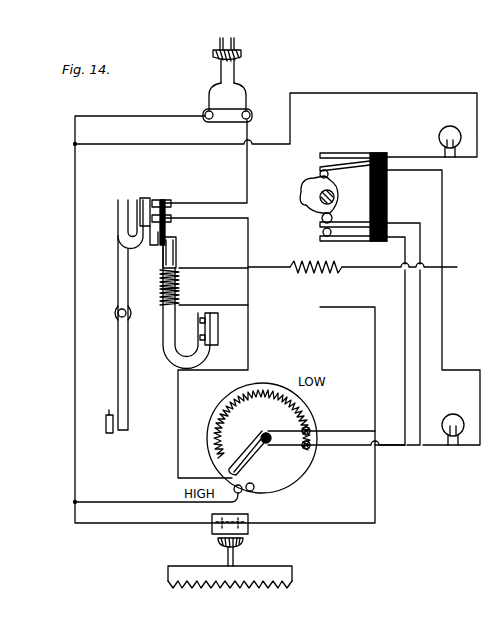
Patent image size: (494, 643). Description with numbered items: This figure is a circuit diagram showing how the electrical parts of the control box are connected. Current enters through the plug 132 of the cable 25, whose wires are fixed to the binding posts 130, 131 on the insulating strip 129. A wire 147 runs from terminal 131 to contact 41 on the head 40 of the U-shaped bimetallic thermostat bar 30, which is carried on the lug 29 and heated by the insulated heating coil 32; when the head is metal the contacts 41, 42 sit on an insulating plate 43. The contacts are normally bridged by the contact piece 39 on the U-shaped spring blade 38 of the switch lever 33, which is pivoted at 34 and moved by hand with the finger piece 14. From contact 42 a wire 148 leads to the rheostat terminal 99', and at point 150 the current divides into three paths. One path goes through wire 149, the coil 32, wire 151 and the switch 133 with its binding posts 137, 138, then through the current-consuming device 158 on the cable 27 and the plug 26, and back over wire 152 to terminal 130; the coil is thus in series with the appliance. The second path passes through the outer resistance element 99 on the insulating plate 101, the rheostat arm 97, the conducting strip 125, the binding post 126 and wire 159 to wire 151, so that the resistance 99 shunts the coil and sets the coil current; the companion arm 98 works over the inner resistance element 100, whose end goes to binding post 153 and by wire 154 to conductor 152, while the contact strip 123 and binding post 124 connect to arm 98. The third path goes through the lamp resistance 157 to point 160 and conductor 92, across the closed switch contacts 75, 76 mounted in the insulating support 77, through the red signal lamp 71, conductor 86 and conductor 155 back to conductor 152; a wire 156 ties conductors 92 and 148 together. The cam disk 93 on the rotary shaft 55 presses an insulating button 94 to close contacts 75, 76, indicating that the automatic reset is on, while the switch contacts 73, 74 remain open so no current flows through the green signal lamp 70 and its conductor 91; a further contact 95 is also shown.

The finger piece 14 is at (108, 434).
The cable 25 is at (226, 72).
The plug 26 is at (244, 541).
The cable 27 is at (228, 559).
The lug 29 is at (219, 329).
The thermostat bar 30 is at (164, 337).
The heating coil 32 is at (180, 290).
The switch lever 33 is at (118, 377).
The pivot 34 is at (118, 312).
The spring blade 38 is at (133, 236).
The contact piece 39 is at (146, 197).
The head 40 is at (177, 252).
The contact 41 is at (162, 198).
The contact 42 is at (153, 228).
The insulating plate 43 is at (172, 224).
The rotary shaft 55 is at (320, 199).
The signal lamp 70 is at (459, 413).
The signal lamp 71 is at (440, 134).
The switch contact 73 is at (352, 228).
The switch contact 74 is at (364, 243).
The switch contact 75 is at (344, 162).
The switch contact 76 is at (355, 153).
The insulating support 77 is at (387, 186).
The conductor 86 is at (398, 156).
The conductor 91 is at (409, 228).
The conductor 92 is at (432, 170).
The cam disk 93 is at (304, 190).
The insulating button 94 is at (320, 172).
The contact 95 is at (310, 233).
The rheostat arm 97 is at (240, 450).
The rheostat arm 98 is at (262, 453).
The resistance element 99 is at (262, 404).
The rheostat terminal 99' is at (258, 496).
The resistance element 100 is at (291, 407).
The insulating plate 101 is at (226, 398).
The contact strip 123 is at (295, 450).
The binding post 124 is at (312, 448).
The conducting strip 125 is at (314, 429).
The binding post 126 is at (312, 445).
The insulating strip 129 is at (212, 122).
The binding post 130 is at (205, 112).
The binding post 131 is at (247, 110).
The plug 132 is at (213, 52).
The switch 133 is at (211, 516).
The binding post 137 is at (212, 527).
The binding post 138 is at (250, 527).
The wire 147 is at (247, 172).
The wire 148 is at (248, 255).
The wire 149 is at (221, 258).
The point 150 is at (237, 271).
The wire 151 is at (374, 329).
The wire 152 is at (75, 176).
The binding post 153 is at (256, 488).
The wire 154 is at (142, 496).
The conductor 155 is at (360, 92).
The wire 156 is at (356, 270).
The resistance 157 is at (304, 270).
The current-consuming device 158 is at (293, 583).
The wire 159 is at (373, 430).
The point 160 is at (367, 271).